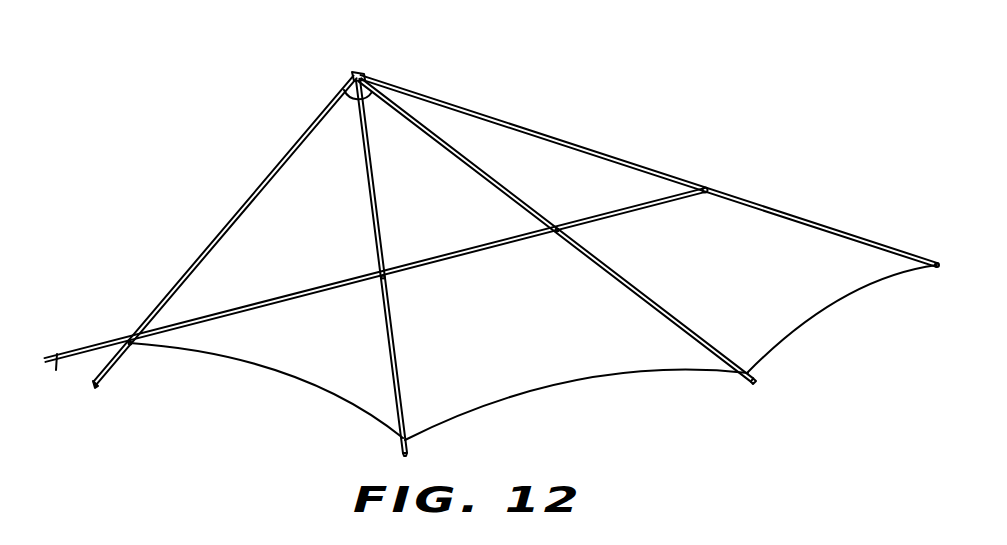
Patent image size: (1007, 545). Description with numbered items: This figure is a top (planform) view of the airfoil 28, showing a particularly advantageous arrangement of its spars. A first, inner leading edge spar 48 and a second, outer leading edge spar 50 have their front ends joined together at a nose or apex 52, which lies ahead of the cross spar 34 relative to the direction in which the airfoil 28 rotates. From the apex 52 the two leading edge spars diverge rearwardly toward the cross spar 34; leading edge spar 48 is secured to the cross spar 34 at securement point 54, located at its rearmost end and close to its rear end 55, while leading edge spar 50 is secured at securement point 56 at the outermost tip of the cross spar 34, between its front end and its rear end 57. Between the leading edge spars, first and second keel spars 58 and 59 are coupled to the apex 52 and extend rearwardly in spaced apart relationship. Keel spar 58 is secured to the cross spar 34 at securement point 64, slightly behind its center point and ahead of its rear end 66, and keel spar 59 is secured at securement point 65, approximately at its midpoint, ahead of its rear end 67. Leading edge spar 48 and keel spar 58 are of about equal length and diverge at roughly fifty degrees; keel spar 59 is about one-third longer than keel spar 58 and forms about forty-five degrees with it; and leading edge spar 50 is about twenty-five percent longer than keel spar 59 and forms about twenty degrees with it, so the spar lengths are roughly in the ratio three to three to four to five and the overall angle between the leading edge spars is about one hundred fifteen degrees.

The airfoil 28 is at (170, 276).
The cross spar 34 is at (289, 296).
The first leading edge spar 48 is at (253, 193).
The second leading edge spar 50 is at (553, 138).
The apex 52 is at (352, 77).
The securement point 54 is at (132, 347).
The rear end 55 is at (96, 386).
The securement point 56 is at (705, 188).
The rear end 57 is at (937, 268).
The first keel spar 58 is at (380, 237).
The second keel spar 59 is at (515, 195).
The securement point 64 is at (380, 280).
The securement point 65 is at (557, 233).
The rear end 66 is at (407, 456).
The rear end 67 is at (755, 382).